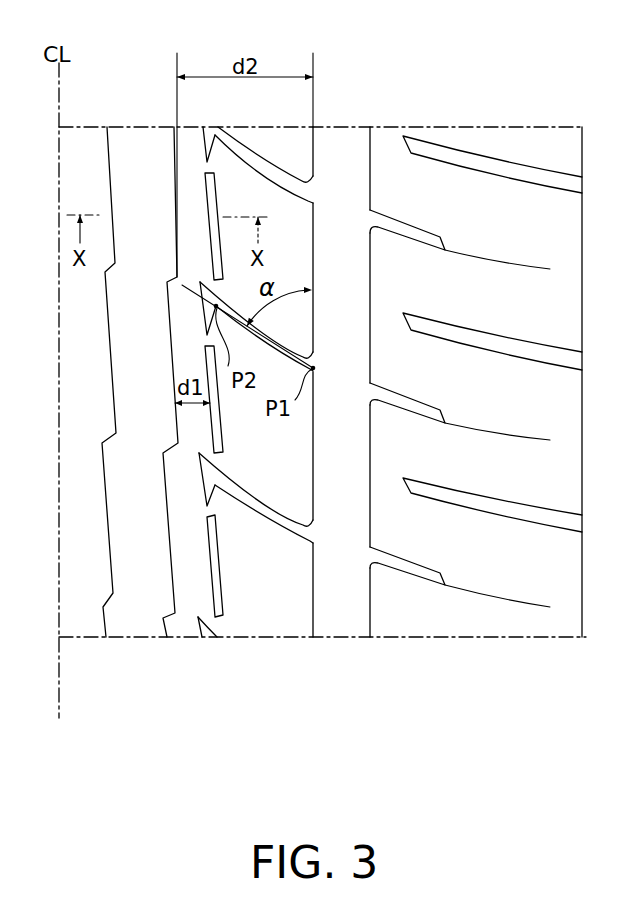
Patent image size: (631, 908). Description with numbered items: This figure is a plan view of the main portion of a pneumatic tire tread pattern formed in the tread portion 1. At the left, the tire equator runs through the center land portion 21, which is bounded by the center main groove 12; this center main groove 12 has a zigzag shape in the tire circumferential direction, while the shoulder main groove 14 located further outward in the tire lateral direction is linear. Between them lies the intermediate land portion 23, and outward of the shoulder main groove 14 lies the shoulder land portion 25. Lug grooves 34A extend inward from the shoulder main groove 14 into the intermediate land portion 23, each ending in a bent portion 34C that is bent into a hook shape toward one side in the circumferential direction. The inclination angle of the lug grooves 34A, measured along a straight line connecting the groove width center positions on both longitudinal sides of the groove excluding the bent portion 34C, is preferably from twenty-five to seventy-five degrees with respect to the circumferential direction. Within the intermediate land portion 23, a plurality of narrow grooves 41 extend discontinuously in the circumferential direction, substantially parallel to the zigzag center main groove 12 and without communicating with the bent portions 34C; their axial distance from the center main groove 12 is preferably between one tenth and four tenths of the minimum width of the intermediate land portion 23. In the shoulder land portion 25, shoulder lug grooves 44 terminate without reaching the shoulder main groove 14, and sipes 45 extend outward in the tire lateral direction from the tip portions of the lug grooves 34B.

The tread portion 1 is at (554, 125).
The center main groove 12 is at (148, 140).
The shoulder main groove 14 is at (355, 138).
The center land portion 21 is at (92, 140).
The intermediate land portion 23 is at (298, 612).
The shoulder land portion 25 is at (507, 147).
The lug groove 34A is at (268, 513).
The lug groove 34B is at (424, 578).
The bent portion 34C is at (210, 484).
The narrow groove 41 is at (218, 584).
The shoulder lug groove 44 is at (565, 528).
The sipe 45 is at (510, 600).